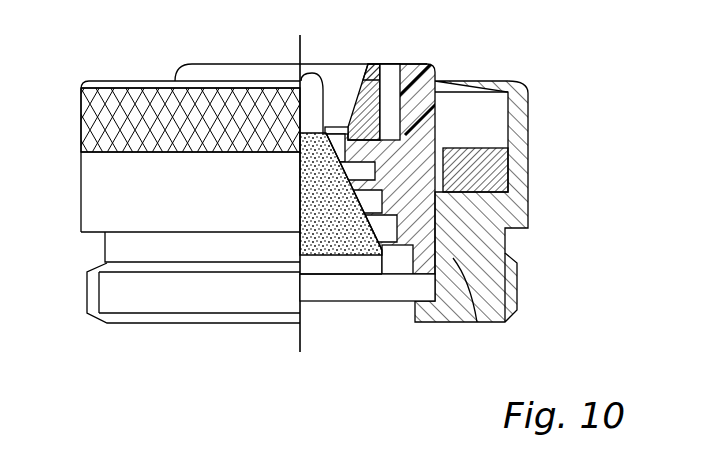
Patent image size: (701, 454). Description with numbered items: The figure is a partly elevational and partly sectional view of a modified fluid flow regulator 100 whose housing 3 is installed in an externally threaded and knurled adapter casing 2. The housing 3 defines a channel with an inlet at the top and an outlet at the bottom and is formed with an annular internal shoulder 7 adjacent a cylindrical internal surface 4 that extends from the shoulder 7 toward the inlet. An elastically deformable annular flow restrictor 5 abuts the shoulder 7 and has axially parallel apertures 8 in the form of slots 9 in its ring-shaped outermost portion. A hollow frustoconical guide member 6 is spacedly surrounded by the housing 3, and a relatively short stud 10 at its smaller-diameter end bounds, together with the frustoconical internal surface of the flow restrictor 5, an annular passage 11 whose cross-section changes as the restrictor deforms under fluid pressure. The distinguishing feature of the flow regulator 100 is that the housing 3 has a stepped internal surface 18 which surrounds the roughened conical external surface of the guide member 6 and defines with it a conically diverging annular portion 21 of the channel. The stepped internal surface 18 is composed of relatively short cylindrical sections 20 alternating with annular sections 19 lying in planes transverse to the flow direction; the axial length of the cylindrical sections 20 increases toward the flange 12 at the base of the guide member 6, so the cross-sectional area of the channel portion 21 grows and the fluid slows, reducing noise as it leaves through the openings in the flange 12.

The fluid flow regulator 100 is at (126, 68).
The adapter casing 2 is at (95, 209).
The housing 3 is at (422, 112).
The cylindrical internal surface 4 is at (393, 85).
The flow restrictor 5 is at (373, 72).
The guide member 6 is at (304, 178).
The annular internal shoulder 7 is at (372, 97).
The apertures 8 is at (388, 107).
The slots 9 is at (397, 72).
The stud 10 is at (312, 87).
The annular passage 11 is at (337, 137).
The flange 12 is at (345, 288).
The stepped internal surface 18 is at (404, 218).
The annular sections 19 is at (477, 322).
The cylindrical sections 20 is at (408, 261).
The annular portion of the channel 21 is at (373, 203).